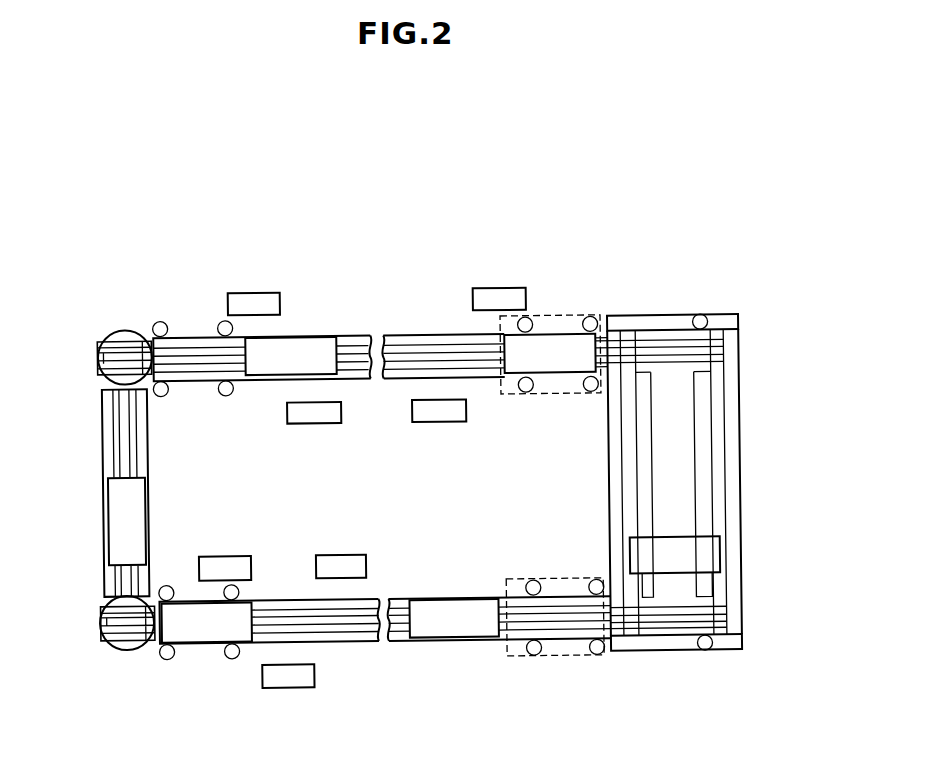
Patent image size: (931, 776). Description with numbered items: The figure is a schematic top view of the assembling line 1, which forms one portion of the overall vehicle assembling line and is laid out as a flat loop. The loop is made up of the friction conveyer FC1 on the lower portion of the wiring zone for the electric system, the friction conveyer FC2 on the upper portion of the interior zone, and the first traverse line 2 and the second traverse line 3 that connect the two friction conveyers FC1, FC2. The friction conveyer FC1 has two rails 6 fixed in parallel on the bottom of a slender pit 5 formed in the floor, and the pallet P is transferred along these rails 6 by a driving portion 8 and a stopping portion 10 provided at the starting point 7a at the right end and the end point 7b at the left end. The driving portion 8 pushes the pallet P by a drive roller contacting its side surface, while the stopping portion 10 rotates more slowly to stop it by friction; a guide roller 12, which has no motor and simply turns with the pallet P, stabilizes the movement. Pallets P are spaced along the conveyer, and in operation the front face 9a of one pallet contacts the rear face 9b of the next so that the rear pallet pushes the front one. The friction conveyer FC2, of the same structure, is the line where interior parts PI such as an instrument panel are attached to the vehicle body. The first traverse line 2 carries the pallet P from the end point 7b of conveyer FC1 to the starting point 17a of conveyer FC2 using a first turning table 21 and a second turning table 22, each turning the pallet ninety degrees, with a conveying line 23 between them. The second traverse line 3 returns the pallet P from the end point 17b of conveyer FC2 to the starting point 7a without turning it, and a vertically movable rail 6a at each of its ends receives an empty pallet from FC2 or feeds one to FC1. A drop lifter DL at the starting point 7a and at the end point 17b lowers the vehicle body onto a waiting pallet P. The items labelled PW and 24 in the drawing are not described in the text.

The assembling line 1 is at (595, 197).
The first traverse line 2 is at (93, 469).
The second traverse line 3 is at (741, 491).
The slender pit 5 is at (440, 340).
The rails 6 is at (100, 369).
The rail 6a is at (722, 352).
The starting point 7a is at (567, 337).
The end point 7b is at (190, 335).
The driving portion 8 is at (705, 318).
The front face 9a is at (503, 378).
The rear face 9b is at (607, 332).
The stopping portion 10 is at (158, 320).
The guide roller 12 is at (224, 320).
The starting point 17a is at (200, 641).
The end point 17b is at (570, 642).
The first turning table 21 is at (127, 329).
The second turning table 22 is at (107, 644).
The conveying line 23 is at (108, 533).
The bar 24 is at (100, 341).
The pallet P is at (714, 563).
The photo sensor PW is at (258, 302).
The interior parts PI is at (340, 566).
The friction conveyer FC1 is at (393, 343).
The friction conveyer FC2 is at (403, 642).
The drop lifter DL is at (546, 318).